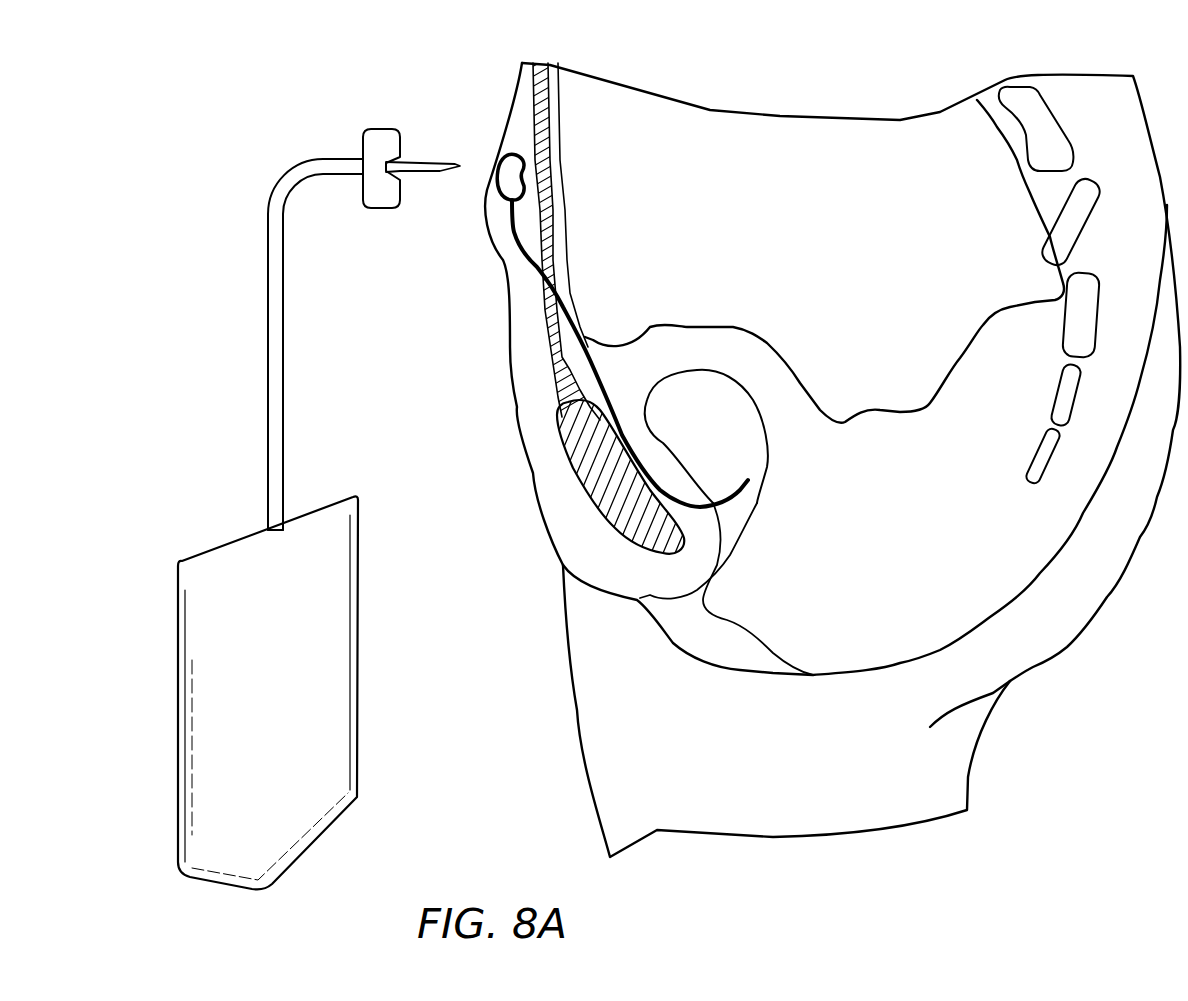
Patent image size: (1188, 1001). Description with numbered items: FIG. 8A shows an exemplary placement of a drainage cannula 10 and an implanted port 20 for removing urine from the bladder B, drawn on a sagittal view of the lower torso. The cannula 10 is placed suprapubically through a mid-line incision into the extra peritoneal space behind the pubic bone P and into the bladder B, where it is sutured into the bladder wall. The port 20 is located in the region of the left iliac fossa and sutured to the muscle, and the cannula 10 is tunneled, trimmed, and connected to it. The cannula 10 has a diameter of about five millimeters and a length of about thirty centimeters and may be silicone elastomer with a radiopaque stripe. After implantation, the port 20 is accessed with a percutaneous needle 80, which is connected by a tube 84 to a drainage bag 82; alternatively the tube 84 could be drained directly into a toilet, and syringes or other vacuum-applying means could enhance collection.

The drainage cannula 10 is at (585, 330).
The implanted port 20 is at (512, 175).
The percutaneous needle 80 is at (430, 168).
The drainage bag 82 is at (330, 675).
The tube 84 is at (277, 312).
The bladder B is at (720, 410).
The pubic bone P is at (593, 487).